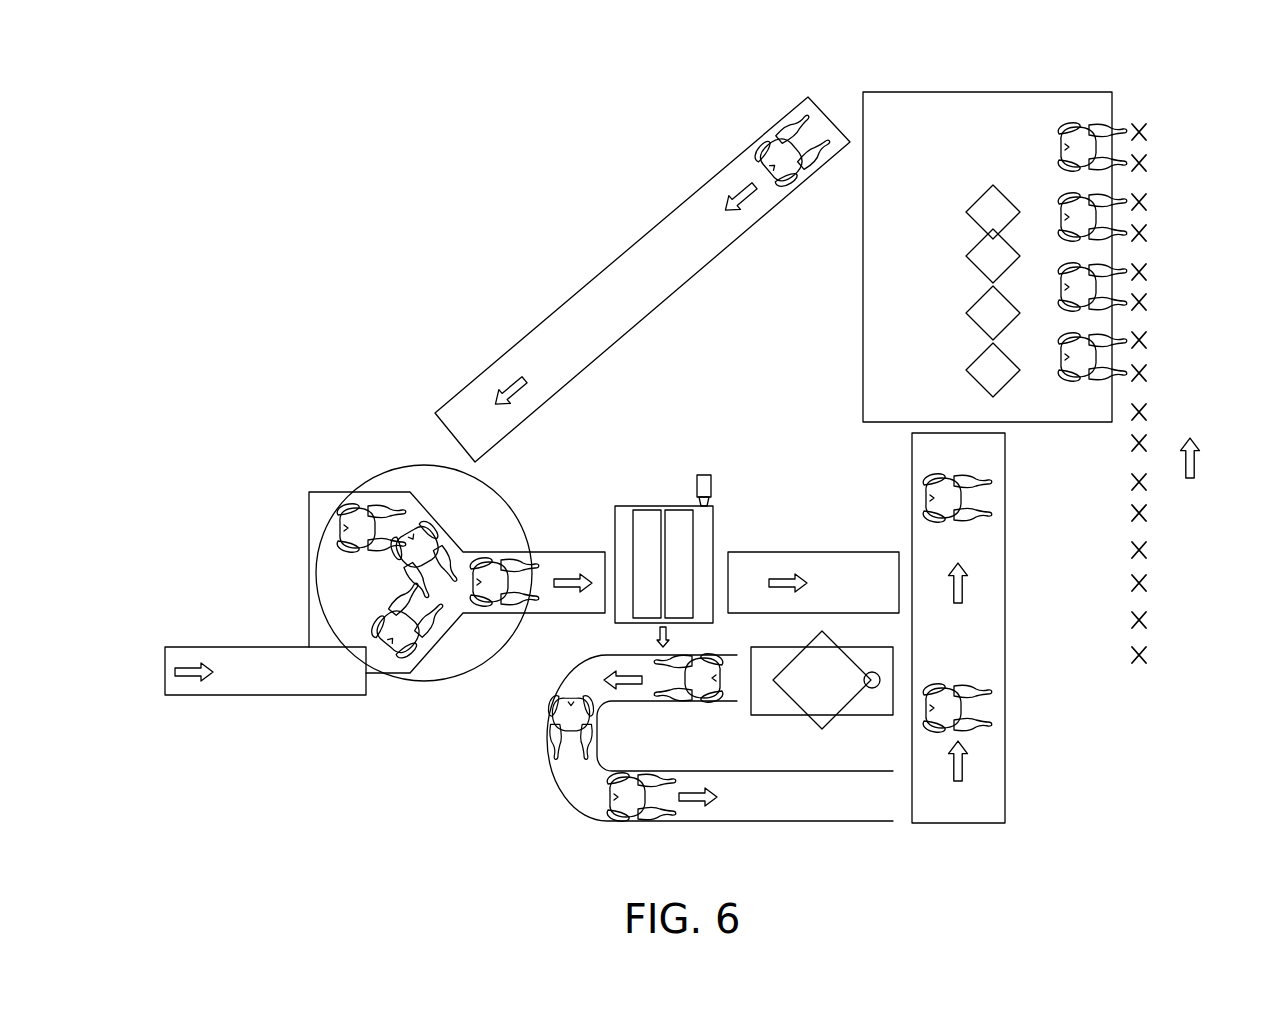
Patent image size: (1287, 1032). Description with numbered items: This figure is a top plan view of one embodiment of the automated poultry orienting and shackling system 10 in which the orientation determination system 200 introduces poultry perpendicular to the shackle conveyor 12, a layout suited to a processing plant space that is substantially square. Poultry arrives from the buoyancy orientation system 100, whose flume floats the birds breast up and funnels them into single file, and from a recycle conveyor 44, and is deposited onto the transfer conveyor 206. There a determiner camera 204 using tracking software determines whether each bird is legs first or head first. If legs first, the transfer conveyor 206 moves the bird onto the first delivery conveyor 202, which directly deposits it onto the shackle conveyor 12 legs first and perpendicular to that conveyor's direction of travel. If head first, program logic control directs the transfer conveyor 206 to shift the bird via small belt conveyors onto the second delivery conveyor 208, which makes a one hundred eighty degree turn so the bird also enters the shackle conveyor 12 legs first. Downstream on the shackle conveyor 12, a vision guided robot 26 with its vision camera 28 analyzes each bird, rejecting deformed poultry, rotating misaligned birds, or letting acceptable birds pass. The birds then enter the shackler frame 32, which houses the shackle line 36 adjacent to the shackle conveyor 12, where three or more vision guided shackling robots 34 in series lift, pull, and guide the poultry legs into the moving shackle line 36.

The automated poultry orienting and shackling system 10 is at (459, 118).
The shackle conveyor 12 is at (1007, 551).
The vision guided robot 26 is at (770, 720).
The vision camera 28 is at (873, 688).
The shackler frame 32 is at (1013, 86).
The shackling robots 34 is at (966, 212).
The shackle line 36 is at (1162, 602).
The recycle conveyor 44 is at (648, 257).
The buoyancy orientation system 100 is at (327, 490).
The orientation determination system 200 is at (623, 505).
The first delivery conveyor 202 is at (808, 553).
The determiner camera 204 is at (707, 476).
The transfer conveyor 206 is at (679, 512).
The second delivery conveyor 208 is at (572, 788).